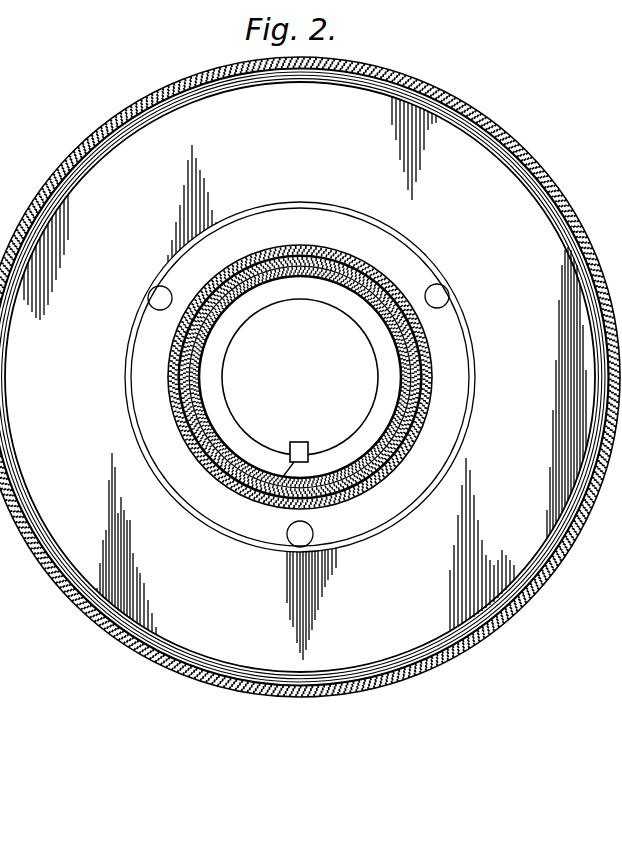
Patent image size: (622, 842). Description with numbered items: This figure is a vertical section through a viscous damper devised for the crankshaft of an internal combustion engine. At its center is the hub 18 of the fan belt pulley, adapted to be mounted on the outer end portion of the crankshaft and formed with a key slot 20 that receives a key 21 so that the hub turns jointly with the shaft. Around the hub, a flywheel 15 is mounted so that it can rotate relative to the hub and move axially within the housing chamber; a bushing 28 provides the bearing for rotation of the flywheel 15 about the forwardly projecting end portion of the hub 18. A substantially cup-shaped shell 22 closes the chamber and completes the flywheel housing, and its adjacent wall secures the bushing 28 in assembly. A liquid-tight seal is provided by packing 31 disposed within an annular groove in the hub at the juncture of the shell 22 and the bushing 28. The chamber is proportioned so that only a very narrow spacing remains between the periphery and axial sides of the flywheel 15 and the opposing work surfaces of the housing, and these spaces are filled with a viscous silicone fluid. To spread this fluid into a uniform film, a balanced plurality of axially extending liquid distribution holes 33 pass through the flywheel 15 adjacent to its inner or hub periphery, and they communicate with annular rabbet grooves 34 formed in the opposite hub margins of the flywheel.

The flywheel 15 is at (393, 588).
The hub 18 is at (427, 421).
The key slot 20 is at (290, 452).
The key 21 is at (266, 505).
The shell 22 is at (319, 700).
The bushing 28 is at (428, 345).
The packing 31 is at (407, 461).
The liquid distribution holes 33 is at (168, 289).
The annular rabbet grooves 34 is at (405, 258).